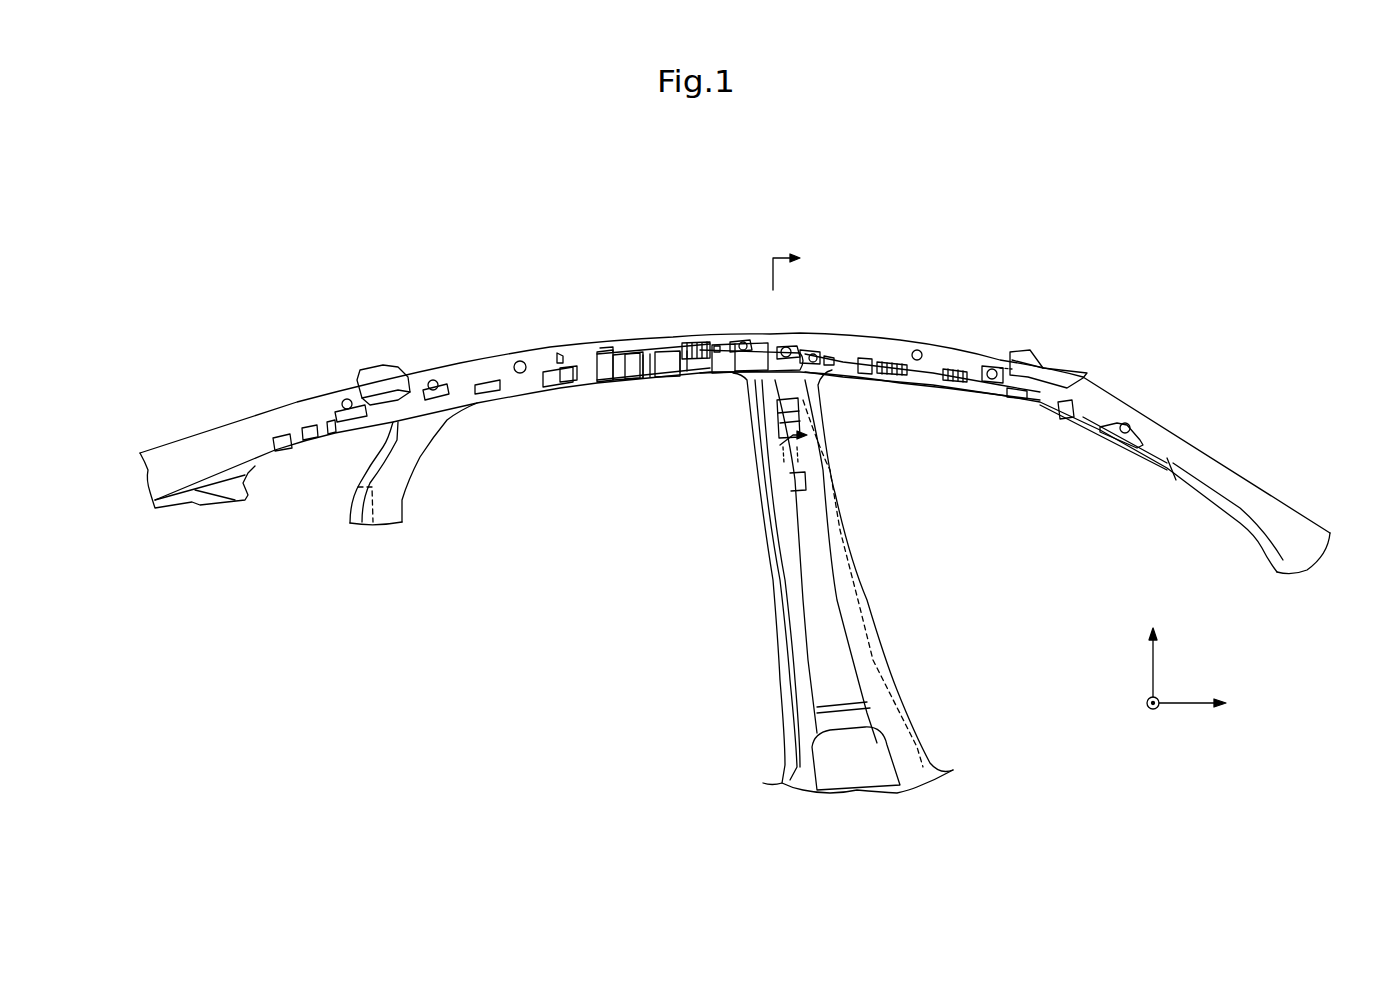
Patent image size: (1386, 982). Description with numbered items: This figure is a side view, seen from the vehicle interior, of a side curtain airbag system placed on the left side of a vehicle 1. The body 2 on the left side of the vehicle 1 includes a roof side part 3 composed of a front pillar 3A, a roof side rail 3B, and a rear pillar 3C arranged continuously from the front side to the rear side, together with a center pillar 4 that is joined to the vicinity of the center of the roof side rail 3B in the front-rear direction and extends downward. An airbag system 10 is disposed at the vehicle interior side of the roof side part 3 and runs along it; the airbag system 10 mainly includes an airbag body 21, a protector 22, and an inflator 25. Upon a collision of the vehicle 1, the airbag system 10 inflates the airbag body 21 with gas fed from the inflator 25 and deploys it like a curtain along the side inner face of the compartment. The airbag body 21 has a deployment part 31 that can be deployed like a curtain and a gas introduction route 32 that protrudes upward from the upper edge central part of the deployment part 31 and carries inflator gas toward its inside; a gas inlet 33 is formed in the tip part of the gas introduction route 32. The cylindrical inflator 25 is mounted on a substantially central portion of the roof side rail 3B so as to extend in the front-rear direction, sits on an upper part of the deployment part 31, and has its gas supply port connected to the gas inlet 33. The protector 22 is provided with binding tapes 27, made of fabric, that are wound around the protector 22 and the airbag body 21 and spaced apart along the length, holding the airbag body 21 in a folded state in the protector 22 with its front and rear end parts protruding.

The vehicle 1 is at (735, 509).
The body 2 is at (854, 360).
The roof side part 3 is at (735, 414).
The front pillar 3A is at (1163, 440).
The roof side rail 3B is at (862, 362).
The rear pillar 3C is at (305, 415).
The center pillar 4 is at (813, 517).
The airbag system 10 is at (682, 383).
The airbag body 21 is at (628, 375).
The protector 22 is at (790, 360).
The inflator 25 is at (640, 360).
The binding tape 27 is at (563, 353).
The deployment part 31 is at (728, 373).
The gas introduction route 32 is at (743, 347).
The gas inlet 33 is at (670, 348).